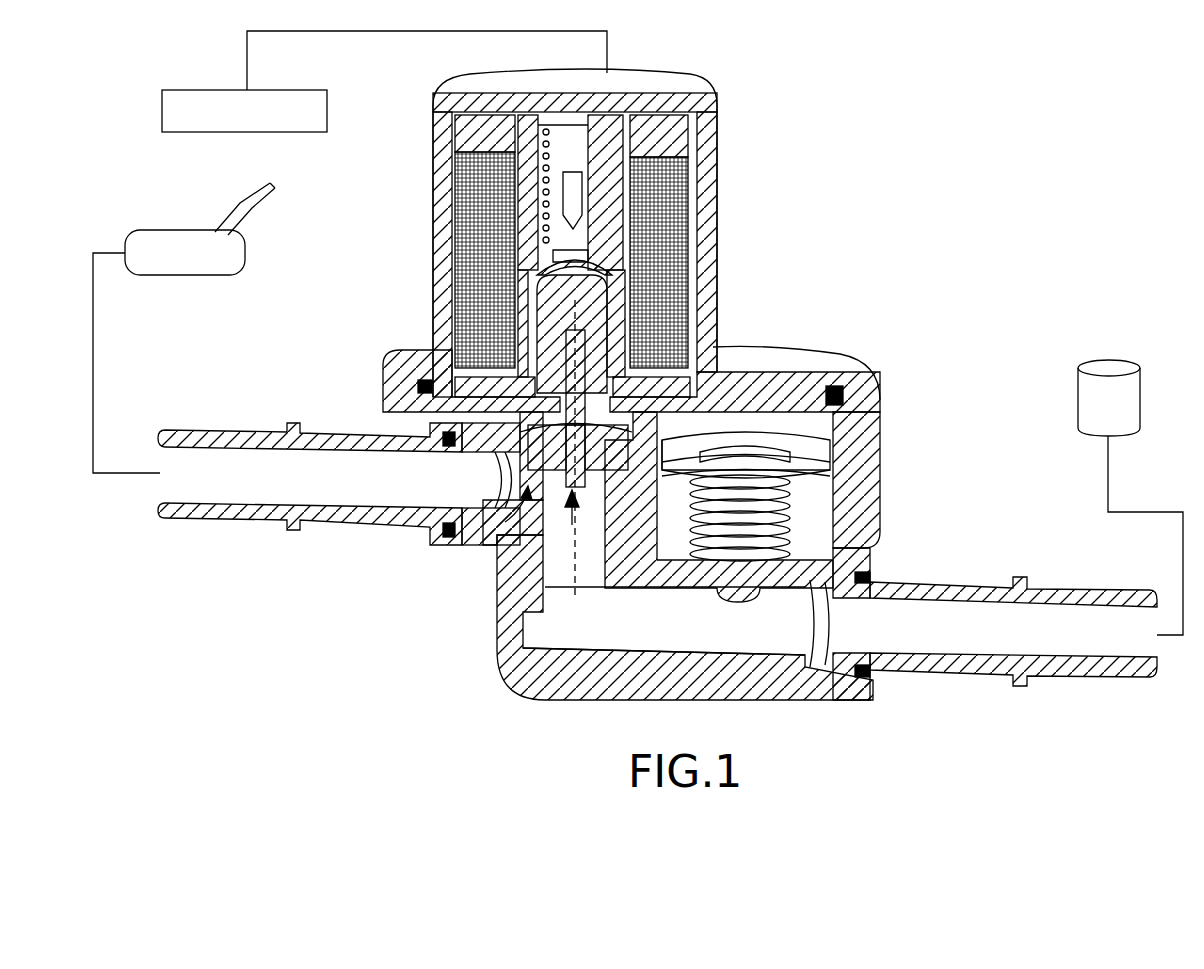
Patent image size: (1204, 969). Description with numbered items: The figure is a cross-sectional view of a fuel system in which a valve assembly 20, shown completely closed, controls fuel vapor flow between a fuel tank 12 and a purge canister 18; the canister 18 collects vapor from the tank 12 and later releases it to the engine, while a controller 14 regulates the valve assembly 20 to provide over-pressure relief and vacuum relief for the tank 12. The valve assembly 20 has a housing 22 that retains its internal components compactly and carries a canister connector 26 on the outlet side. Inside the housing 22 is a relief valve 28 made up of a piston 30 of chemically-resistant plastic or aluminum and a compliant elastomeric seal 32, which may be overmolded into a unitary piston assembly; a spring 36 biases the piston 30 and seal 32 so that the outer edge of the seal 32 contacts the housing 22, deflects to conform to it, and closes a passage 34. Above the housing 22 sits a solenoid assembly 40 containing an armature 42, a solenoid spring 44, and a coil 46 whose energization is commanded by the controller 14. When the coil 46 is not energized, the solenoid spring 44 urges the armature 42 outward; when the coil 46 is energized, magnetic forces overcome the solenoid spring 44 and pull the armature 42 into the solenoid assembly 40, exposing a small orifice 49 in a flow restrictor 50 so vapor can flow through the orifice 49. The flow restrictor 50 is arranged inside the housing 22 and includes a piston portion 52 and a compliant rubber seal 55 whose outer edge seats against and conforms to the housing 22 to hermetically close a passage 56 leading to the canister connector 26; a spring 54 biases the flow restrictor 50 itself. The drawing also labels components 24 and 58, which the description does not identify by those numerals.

The fuel tank 12 is at (245, 245).
The controller 14 is at (162, 101).
The purge canister 18 is at (1078, 372).
The valve assembly 20 is at (408, 210).
The housing 22 is at (834, 493).
The inlet pipe 24 is at (226, 521).
The canister connector 26 is at (1049, 582).
The relief valve 28 is at (726, 437).
The piston 30 is at (790, 483).
The compliant seal 32 is at (797, 457).
The passage 34 is at (745, 440).
The spring 36 is at (793, 522).
The solenoid assembly 40 is at (618, 208).
The armature 42 is at (580, 350).
The solenoid spring 44 is at (560, 232).
The coil 46 is at (672, 178).
The small orifice 49 is at (563, 540).
The flow restrictor 50 is at (500, 547).
The piston portion 52 is at (560, 377).
The spring 54 is at (600, 527).
The compliant seal 55 is at (497, 475).
The passage 56 is at (428, 423).
The stem 58 is at (586, 492).